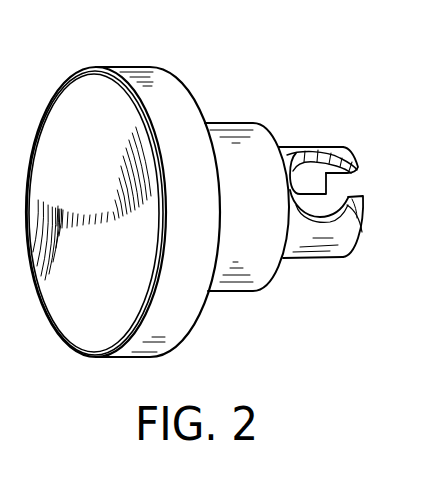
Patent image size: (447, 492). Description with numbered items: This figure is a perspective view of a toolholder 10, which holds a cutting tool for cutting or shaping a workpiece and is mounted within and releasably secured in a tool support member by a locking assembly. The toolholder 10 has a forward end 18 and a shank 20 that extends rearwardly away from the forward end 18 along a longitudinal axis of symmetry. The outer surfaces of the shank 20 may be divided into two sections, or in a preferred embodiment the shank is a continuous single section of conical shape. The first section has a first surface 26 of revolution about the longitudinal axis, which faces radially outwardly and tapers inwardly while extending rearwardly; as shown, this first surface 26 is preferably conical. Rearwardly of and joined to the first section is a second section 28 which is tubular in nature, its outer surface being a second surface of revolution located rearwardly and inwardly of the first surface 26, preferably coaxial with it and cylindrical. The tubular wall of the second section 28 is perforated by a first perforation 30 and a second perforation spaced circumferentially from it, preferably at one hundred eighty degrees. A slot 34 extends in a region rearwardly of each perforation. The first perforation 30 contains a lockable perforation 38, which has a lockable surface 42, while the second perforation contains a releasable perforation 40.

The toolholder 10 is at (290, 297).
The forward end 18 is at (125, 65).
The shank 20 is at (233, 123).
The first surface of revolution 26 is at (234, 294).
The second section 28 is at (327, 258).
The first perforation 30 is at (328, 155).
The slot 34 is at (352, 189).
The lockable perforation 38 is at (363, 230).
The releasable perforation 40 is at (296, 155).
The lockable surface 42 is at (351, 158).